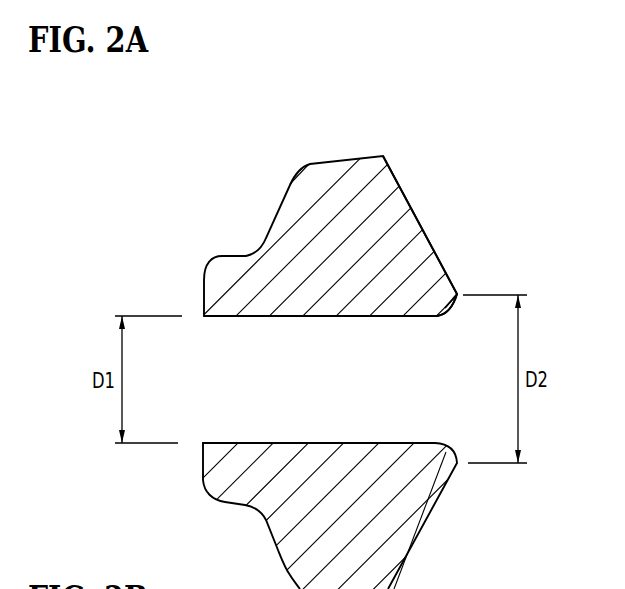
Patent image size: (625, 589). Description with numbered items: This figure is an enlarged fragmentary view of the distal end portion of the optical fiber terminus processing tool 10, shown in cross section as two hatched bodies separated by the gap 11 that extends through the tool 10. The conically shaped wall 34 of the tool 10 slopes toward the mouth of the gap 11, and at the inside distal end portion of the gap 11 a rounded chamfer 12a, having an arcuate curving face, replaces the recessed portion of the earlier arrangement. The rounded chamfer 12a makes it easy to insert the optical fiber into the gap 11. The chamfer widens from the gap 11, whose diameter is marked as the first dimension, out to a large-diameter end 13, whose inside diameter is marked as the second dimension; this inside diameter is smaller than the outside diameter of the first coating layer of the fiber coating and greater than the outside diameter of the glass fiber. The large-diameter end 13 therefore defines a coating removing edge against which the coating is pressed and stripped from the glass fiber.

The optical fiber terminus processing tool 10 is at (342, 345).
The gap 11 is at (304, 357).
The rounded chamfer 12a is at (448, 318).
The large-diameter end 13 is at (458, 292).
The conically shaped wall 34 is at (420, 227).